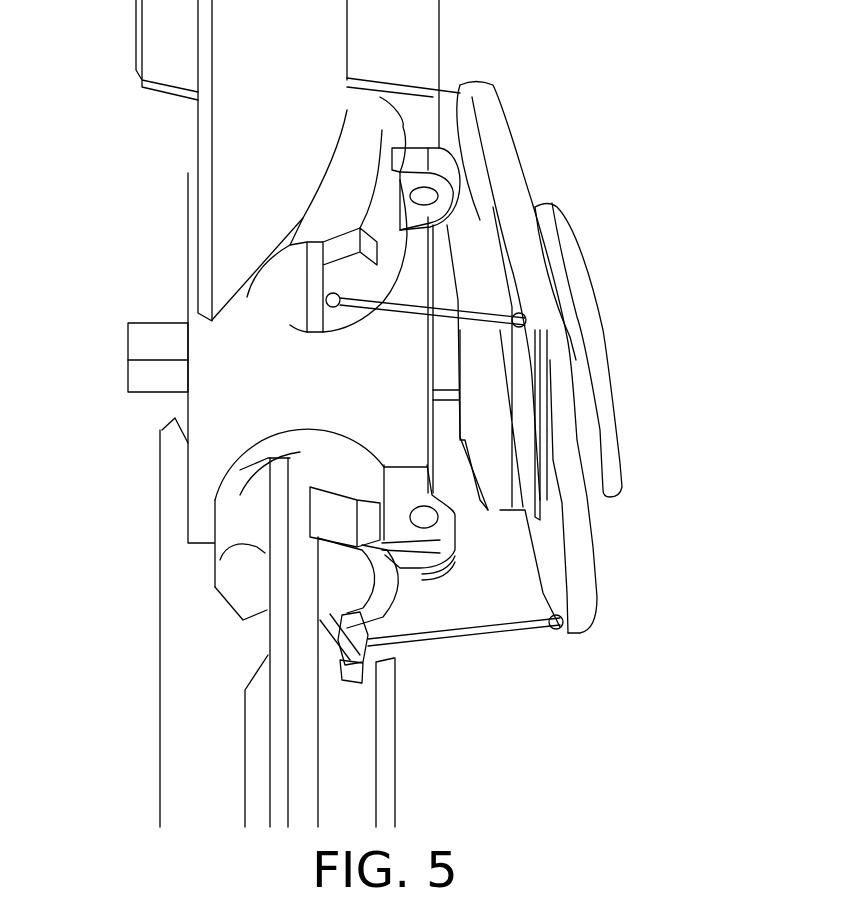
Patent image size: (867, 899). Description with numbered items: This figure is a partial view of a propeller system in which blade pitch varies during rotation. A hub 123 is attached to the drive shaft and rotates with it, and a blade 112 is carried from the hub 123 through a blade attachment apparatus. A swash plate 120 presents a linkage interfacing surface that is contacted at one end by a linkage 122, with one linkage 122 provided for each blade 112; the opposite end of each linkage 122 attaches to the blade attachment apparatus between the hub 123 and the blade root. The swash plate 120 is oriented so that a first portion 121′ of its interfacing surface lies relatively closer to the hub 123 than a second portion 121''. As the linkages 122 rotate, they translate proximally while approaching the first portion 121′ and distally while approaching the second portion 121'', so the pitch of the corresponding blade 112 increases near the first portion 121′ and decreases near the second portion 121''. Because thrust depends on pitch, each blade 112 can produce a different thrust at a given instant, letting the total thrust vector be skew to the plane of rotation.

The blade 112 is at (261, 143).
The swash plate 120 is at (578, 350).
The first portion 121′ is at (463, 105).
The second portion 121'' is at (387, 581).
The linkage 122 is at (477, 628).
The hub 123 is at (317, 368).